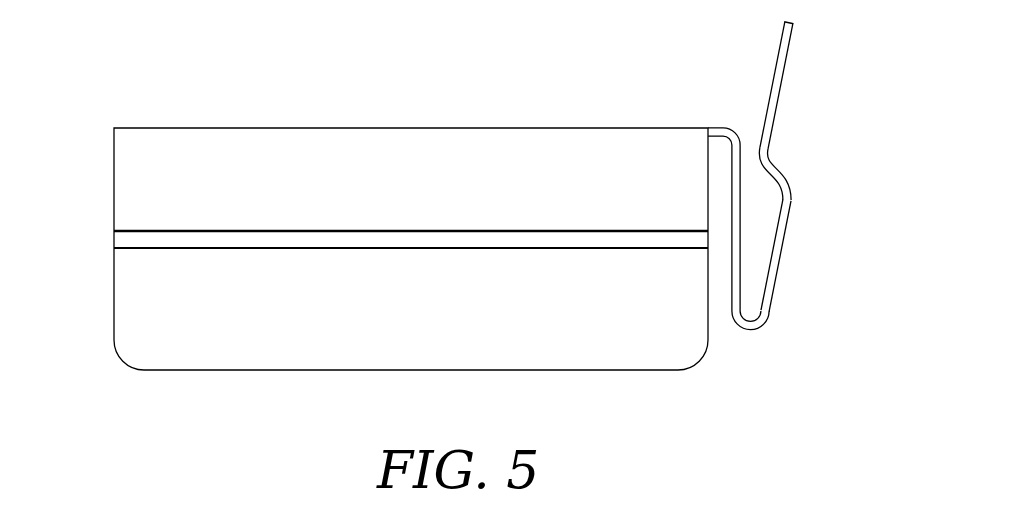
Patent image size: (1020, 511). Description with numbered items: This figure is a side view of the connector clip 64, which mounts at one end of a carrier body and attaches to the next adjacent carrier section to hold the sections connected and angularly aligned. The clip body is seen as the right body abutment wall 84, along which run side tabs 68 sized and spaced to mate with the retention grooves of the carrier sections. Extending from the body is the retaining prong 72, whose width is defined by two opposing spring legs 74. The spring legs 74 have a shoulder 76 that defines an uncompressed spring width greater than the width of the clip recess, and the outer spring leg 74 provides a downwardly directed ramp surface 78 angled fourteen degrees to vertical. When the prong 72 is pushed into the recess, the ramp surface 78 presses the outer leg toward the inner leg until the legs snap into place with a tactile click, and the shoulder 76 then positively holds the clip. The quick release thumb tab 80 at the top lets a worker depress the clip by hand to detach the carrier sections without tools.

The connector clip 64 is at (234, 112).
The side tabs 68 is at (117, 243).
The prong 72 is at (801, 209).
The spring legs 74 is at (776, 289).
The shoulder 76 is at (777, 166).
The ramp surface 78 is at (757, 333).
The thumb tab 80 is at (795, 48).
The right body abutment wall 84 is at (288, 350).